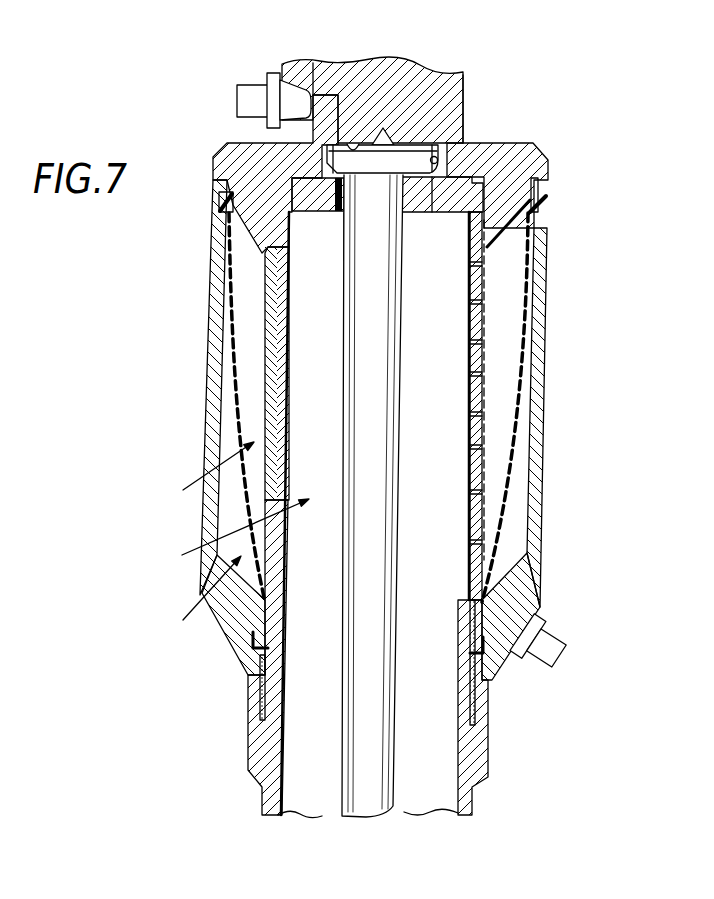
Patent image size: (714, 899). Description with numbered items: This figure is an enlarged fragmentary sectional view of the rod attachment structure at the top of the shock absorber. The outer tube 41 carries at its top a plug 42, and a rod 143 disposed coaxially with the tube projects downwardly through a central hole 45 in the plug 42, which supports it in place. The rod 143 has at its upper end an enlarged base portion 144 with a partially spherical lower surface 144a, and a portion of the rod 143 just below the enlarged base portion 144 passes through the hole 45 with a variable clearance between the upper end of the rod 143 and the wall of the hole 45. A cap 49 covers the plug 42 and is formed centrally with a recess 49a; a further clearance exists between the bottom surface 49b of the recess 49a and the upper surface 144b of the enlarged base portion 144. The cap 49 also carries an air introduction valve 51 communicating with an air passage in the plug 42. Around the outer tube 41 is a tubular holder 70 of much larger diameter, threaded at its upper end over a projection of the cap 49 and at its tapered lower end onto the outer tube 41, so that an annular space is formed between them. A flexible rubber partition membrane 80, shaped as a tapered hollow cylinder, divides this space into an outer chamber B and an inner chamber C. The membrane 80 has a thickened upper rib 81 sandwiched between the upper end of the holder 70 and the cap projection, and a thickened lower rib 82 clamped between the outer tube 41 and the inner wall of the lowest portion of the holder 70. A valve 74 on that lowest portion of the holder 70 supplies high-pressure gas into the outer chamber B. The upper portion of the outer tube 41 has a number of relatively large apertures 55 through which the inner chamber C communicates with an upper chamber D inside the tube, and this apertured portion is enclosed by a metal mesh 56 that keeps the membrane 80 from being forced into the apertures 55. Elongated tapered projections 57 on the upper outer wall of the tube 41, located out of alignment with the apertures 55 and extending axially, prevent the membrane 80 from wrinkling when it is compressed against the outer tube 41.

The outer tube 41 is at (262, 793).
The plug 42 is at (309, 199).
The central hole 45 is at (353, 190).
The cap 49 is at (537, 152).
The recess 49a is at (438, 158).
The bottom surface 49b is at (359, 142).
The air introduction valve 51 is at (246, 94).
The apertures 55 is at (477, 279).
The mesh 56 is at (481, 302).
The elongated projections 57 is at (270, 352).
The tubular holder 70 is at (543, 459).
The valve 74 is at (547, 643).
The partition membrane 80 is at (526, 384).
The upper rib 81 is at (547, 203).
The lower rib 82 is at (486, 651).
The rod 143 is at (357, 793).
The enlarged base portion 144 is at (397, 165).
The partially spherical lower surface 144a is at (434, 213).
The upper surface 144b is at (463, 102).
The outer chamber B is at (202, 596).
The inner chamber C is at (209, 476).
The upper chamber D is at (237, 532).